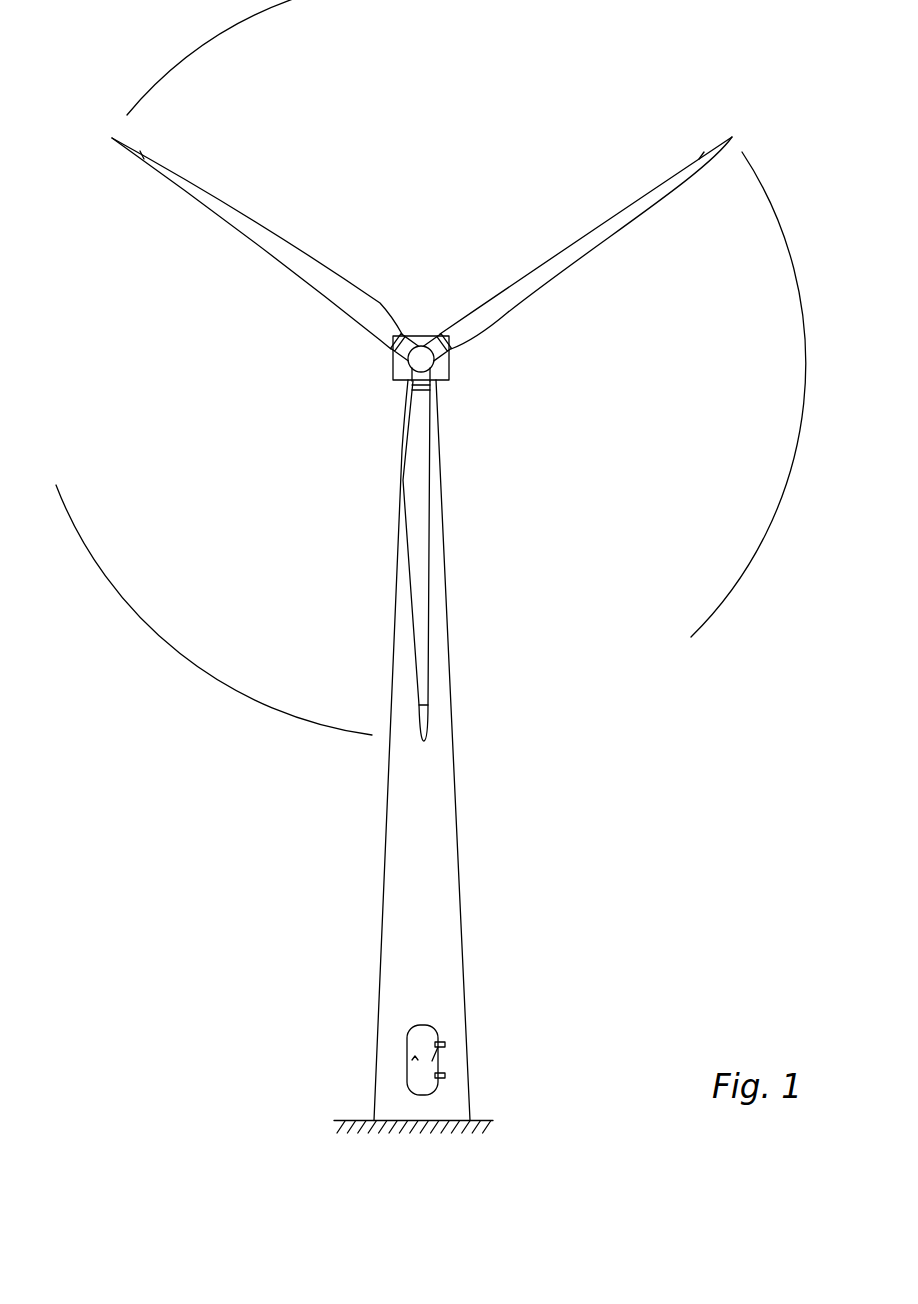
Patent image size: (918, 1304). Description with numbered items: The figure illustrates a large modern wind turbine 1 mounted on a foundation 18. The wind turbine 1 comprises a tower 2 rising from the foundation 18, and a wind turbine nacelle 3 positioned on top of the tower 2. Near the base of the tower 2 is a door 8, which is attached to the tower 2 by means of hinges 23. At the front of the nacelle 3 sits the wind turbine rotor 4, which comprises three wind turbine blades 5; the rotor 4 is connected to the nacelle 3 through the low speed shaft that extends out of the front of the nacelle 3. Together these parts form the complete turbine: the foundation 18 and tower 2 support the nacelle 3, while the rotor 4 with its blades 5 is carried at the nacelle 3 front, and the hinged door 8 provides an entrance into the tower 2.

The wind turbine 1 is at (347, 964).
The tower 2 is at (448, 829).
The wind turbine nacelle 3 is at (450, 383).
The wind turbine rotor 4 is at (409, 364).
The wind turbine blades 5 is at (422, 602).
The door 8 is at (445, 1043).
The foundation 18 is at (368, 1120).
The hinges 23 is at (445, 1075).